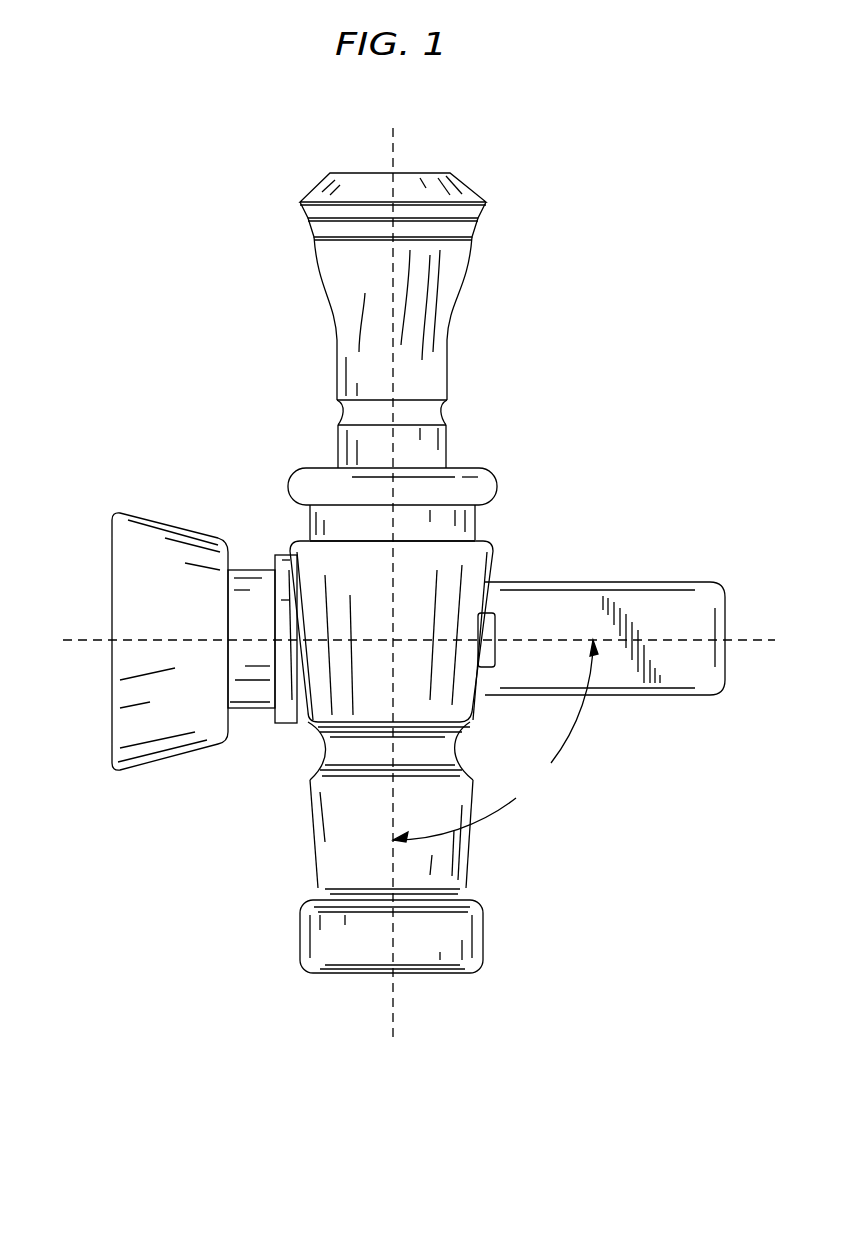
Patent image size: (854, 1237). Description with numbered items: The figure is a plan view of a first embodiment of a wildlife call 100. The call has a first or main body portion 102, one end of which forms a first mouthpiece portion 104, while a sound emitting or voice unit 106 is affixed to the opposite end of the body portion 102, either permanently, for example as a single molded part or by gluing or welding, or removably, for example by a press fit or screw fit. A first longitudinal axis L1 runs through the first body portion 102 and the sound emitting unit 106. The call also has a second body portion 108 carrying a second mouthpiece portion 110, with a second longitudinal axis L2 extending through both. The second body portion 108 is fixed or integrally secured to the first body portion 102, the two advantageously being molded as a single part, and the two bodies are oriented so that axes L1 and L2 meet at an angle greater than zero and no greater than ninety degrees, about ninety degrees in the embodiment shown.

The wildlife call 100 is at (570, 368).
The first body portion 102 is at (293, 727).
The first mouthpiece portion 104 is at (428, 975).
The sound emitting unit 106 is at (447, 382).
The second body portion 108 is at (656, 583).
The second mouthpiece portion 110 is at (112, 566).
The first longitudinal axis L1 is at (397, 170).
The second longitudinal axis L2 is at (98, 640).